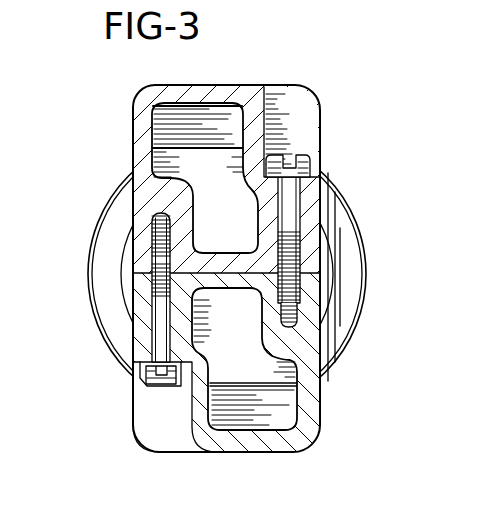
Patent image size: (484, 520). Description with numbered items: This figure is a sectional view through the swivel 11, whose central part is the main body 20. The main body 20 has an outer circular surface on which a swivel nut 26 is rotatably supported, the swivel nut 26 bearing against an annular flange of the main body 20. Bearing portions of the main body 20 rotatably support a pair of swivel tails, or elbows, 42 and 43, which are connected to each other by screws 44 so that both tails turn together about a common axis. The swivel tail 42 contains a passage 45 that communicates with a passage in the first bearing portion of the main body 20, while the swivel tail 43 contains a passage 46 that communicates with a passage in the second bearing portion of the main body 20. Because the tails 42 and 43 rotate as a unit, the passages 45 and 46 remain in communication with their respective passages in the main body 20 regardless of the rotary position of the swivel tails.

The swivel 11 is at (126, 100).
The main body 20 is at (108, 275).
The swivel nut 26 is at (88, 240).
The swivel tail 42 is at (278, 452).
The swivel tail 43 is at (231, 85).
The screws 44 is at (157, 325).
The passage 45 is at (282, 407).
The passage 46 is at (163, 125).